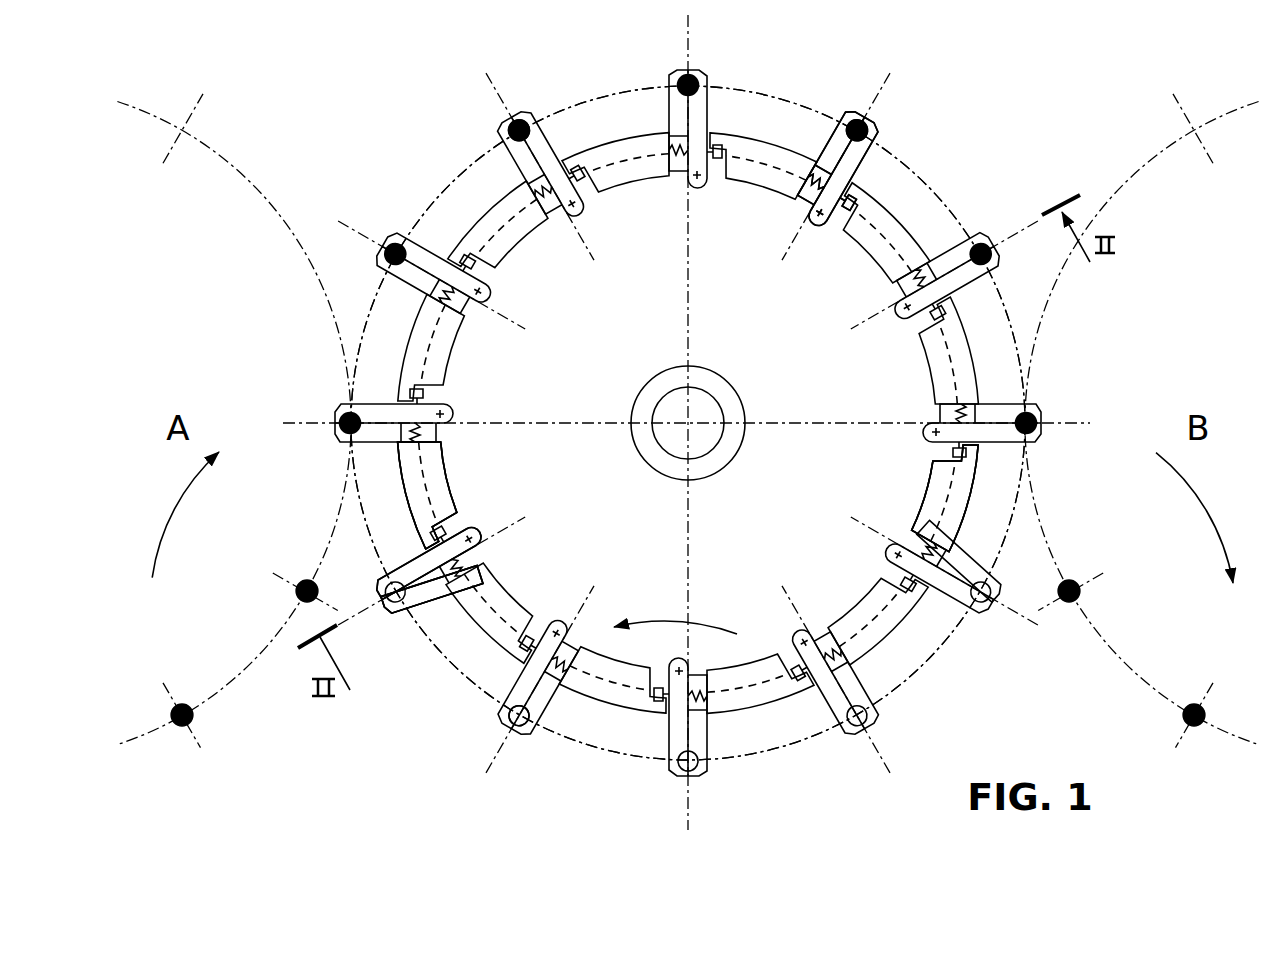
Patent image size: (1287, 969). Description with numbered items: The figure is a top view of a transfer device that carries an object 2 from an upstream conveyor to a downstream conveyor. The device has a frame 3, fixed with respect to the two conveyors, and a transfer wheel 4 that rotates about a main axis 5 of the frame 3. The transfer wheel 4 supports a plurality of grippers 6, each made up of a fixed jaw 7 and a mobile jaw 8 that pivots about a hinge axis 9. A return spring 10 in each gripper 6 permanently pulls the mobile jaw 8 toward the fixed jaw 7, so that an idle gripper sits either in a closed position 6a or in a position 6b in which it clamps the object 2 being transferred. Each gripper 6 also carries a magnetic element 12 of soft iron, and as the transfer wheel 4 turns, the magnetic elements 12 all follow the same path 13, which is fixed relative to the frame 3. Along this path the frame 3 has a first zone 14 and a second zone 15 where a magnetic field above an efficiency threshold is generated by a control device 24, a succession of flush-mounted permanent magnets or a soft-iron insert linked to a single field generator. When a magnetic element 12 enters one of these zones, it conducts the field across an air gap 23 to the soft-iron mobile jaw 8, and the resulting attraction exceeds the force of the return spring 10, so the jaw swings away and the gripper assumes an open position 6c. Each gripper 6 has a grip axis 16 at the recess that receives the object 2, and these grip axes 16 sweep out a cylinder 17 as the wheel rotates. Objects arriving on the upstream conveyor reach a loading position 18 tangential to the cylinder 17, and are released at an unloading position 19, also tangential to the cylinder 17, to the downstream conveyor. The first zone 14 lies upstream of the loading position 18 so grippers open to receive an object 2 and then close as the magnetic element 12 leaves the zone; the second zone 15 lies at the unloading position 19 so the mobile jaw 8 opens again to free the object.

The object 2 is at (511, 126).
The frame 3 is at (603, 704).
The transfer wheel 4 is at (711, 551).
The main axis 5 is at (690, 422).
The gripper 6 is at (872, 167).
The closed position of the gripper 6a is at (701, 768).
The clamping position of the gripper 6b is at (552, 142).
The open position of the gripper 6c is at (437, 606).
The fixed jaw 7 is at (412, 613).
The mobile jaw 8 is at (396, 551).
The hinge axis 9 is at (478, 527).
The return spring 10 is at (480, 552).
The magnetic element 12 is at (446, 520).
The path 13 is at (521, 606).
The first zone 14 is at (428, 486).
The second zone 15 is at (955, 486).
The grip axis 16 is at (397, 600).
The cylinder 17 is at (626, 763).
The loading position 18 is at (338, 416).
The unloading position 19 is at (1034, 416).
The air gap 23 is at (432, 546).
The control device 24 is at (630, 490).